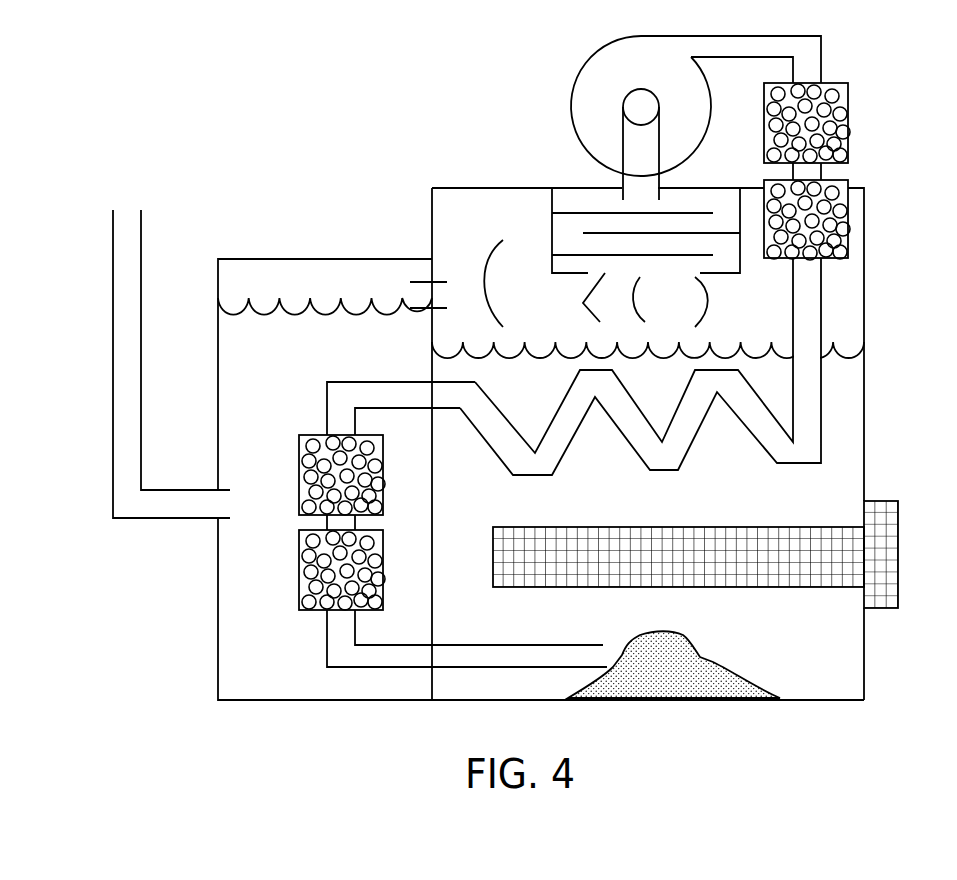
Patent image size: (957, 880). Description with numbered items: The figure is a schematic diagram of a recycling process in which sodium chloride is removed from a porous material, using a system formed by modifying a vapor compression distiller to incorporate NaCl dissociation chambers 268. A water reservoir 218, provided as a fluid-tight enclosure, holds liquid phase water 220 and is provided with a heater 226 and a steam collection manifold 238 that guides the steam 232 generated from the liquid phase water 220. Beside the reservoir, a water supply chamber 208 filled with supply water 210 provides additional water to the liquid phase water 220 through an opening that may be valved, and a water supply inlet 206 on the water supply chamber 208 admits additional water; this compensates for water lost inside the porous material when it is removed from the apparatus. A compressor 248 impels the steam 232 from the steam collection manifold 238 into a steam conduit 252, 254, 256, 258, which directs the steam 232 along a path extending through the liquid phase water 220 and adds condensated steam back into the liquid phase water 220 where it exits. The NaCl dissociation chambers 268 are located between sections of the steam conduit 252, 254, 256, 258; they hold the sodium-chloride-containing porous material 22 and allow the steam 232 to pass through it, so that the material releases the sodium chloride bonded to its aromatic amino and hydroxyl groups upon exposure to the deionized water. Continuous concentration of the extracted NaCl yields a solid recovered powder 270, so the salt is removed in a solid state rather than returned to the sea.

The water supply inlet 206 is at (125, 214).
The water supply chamber 208 is at (273, 258).
The supply water 210 is at (260, 358).
The water reservoir 218 is at (865, 317).
The liquid phase water 220 is at (765, 495).
The sodium-chloride-containing porous material 22 is at (840, 117).
The NaCl dissociation chambers 268 is at (850, 143).
The heater 226 is at (878, 555).
The steam 232 is at (602, 322).
The steam collection manifold 238 is at (552, 230).
The compressor 248 is at (572, 107).
The steam conduit 252 is at (822, 57).
The steam conduit 254 is at (823, 432).
The steam conduit 256 is at (327, 648).
The steam conduit 258 is at (480, 640).
The solid recovered powder 270 is at (696, 665).